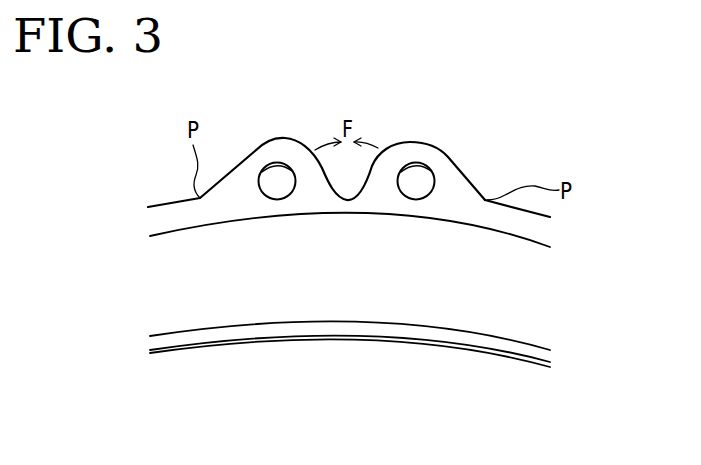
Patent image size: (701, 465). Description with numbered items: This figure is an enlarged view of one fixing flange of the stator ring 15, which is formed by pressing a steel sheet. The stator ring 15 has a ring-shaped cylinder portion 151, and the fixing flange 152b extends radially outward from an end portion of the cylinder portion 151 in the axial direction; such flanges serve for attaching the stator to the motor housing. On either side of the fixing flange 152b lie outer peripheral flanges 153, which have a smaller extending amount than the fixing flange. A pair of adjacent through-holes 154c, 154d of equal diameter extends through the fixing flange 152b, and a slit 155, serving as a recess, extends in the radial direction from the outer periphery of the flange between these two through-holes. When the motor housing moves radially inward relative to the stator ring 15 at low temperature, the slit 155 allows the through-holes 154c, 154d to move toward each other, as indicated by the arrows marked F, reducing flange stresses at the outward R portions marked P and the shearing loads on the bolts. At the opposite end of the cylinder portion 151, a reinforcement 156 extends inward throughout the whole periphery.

The stator ring 15 is at (548, 157).
The cylinder portion 151 is at (458, 303).
The fixing flange 152b is at (422, 152).
The outer peripheral flange 153 is at (163, 213).
The through-hole 154c is at (289, 165).
The through-hole 154d is at (402, 172).
The slit 155 is at (370, 179).
The reinforcement 156 is at (183, 340).